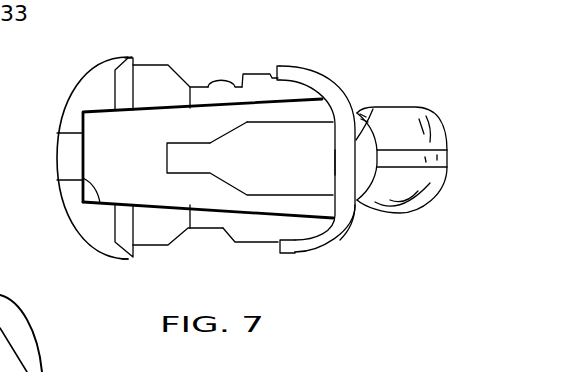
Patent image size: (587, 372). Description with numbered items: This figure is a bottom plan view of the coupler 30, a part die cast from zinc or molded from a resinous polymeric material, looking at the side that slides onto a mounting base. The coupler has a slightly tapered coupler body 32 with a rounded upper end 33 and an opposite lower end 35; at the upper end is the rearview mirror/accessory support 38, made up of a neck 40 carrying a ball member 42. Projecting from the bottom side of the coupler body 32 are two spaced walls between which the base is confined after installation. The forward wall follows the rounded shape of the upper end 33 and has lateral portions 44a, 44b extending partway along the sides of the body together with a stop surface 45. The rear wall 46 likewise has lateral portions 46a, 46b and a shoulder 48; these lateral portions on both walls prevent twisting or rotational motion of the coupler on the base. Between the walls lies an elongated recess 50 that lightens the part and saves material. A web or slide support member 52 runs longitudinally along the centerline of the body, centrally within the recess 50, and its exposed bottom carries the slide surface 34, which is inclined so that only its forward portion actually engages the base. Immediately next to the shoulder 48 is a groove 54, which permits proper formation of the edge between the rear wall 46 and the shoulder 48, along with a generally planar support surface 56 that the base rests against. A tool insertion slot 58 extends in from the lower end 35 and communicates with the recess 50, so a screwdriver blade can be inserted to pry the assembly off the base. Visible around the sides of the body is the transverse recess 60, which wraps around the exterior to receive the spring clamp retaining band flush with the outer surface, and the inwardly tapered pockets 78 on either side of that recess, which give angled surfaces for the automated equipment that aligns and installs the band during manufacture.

The coupler 30 is at (402, 76).
The coupler body 32 is at (342, 73).
The upper end of coupler body 33 is at (357, 223).
The base contact or slide surface 34 is at (277, 165).
The lower end of coupler body 35 is at (61, 217).
The rearview mirror/accessory support 38 is at (357, 211).
The neck 40 is at (362, 115).
The ball member 42 is at (425, 118).
The lateral portion of wall 44 44a is at (282, 68).
The lateral portion of wall 44 44b is at (294, 246).
The stop surface 45 is at (334, 168).
The rear wall 46 is at (70, 103).
The lateral portion of rear wall 46a is at (111, 56).
The lateral portion of rear wall 46b is at (125, 258).
The shoulder 48 is at (116, 90).
The elongated recess 50 is at (57, 174).
The web or slide support member 52 is at (224, 133).
The groove or recess 54 is at (122, 104).
The support surface 56 is at (178, 86).
The tool insertion slot 58 is at (57, 134).
The transverse recess 60 is at (256, 49).
The inwardly tapered pockets or recesses 78 is at (241, 78).